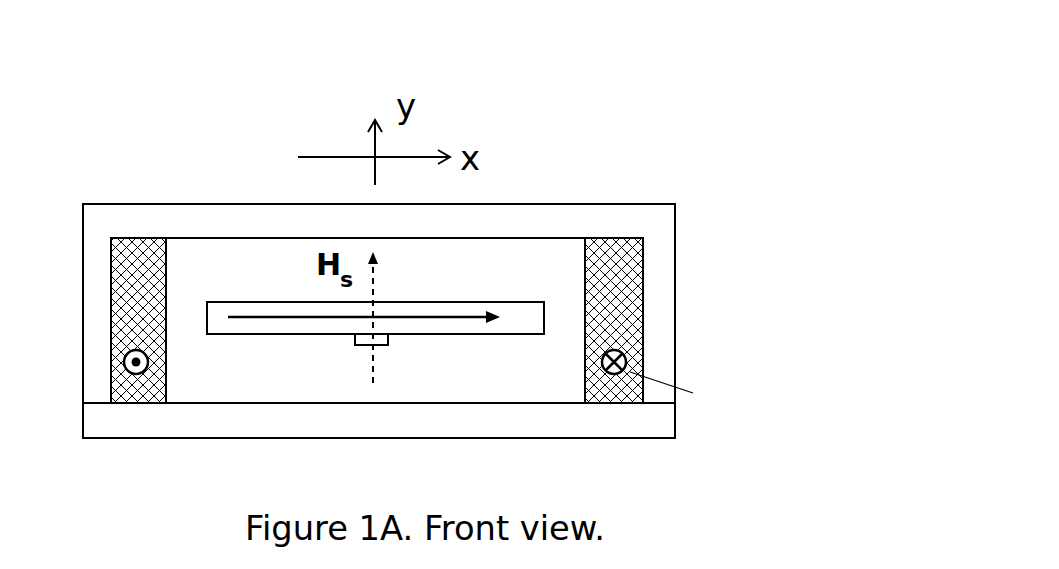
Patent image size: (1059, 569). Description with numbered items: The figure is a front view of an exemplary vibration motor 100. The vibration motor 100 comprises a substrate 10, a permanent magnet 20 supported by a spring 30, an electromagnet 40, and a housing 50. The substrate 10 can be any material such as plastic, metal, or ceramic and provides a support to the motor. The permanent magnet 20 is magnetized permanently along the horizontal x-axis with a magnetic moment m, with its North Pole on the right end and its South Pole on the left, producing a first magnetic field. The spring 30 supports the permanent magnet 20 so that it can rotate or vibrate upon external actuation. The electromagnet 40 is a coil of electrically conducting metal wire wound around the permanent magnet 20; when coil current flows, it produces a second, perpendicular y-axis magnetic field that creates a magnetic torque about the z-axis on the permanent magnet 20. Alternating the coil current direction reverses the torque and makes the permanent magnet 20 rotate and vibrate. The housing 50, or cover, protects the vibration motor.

The vibration motor 100 is at (600, 122).
The housing 50 is at (522, 222).
The substrate 10 is at (312, 423).
The electromagnet 40 is at (641, 263).
The permanent magnet 20 is at (405, 312).
The spring 30 is at (360, 343).